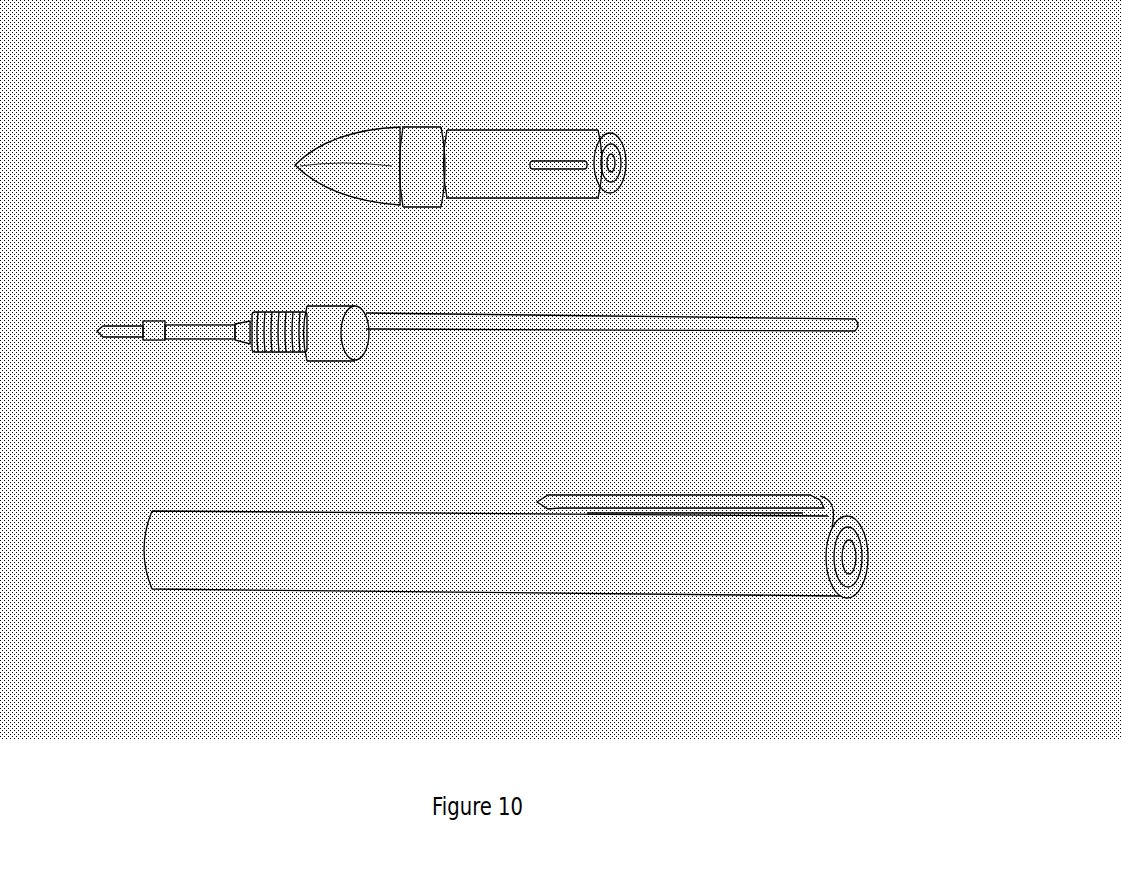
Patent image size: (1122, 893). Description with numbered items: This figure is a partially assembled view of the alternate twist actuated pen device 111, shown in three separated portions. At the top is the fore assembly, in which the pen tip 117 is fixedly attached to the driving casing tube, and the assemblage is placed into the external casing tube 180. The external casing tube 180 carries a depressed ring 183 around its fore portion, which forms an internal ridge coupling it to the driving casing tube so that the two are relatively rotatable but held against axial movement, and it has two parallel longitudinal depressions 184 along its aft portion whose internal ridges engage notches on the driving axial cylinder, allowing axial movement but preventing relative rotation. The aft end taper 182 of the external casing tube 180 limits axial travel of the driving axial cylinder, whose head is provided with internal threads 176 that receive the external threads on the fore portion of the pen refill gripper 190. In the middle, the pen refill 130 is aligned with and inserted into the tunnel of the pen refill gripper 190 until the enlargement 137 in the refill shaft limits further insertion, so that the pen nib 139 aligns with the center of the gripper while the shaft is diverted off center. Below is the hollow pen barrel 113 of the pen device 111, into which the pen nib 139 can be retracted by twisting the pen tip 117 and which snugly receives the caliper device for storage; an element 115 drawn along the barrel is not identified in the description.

The twist actuated pen device 111 is at (506, 558).
The pen barrel 113 is at (297, 533).
The clip 115 is at (648, 498).
The pen tip 117 is at (363, 150).
The pen refill 130 is at (449, 343).
The enlargement 137 is at (242, 322).
The pen nib 139 is at (118, 325).
The internal threads 176 is at (613, 157).
The external casing tube 180 is at (500, 143).
The aft end taper 182 is at (608, 193).
The depressed ring 183 is at (445, 195).
The longitudinal depression 184 is at (572, 163).
The pen refill gripper 190 is at (293, 374).